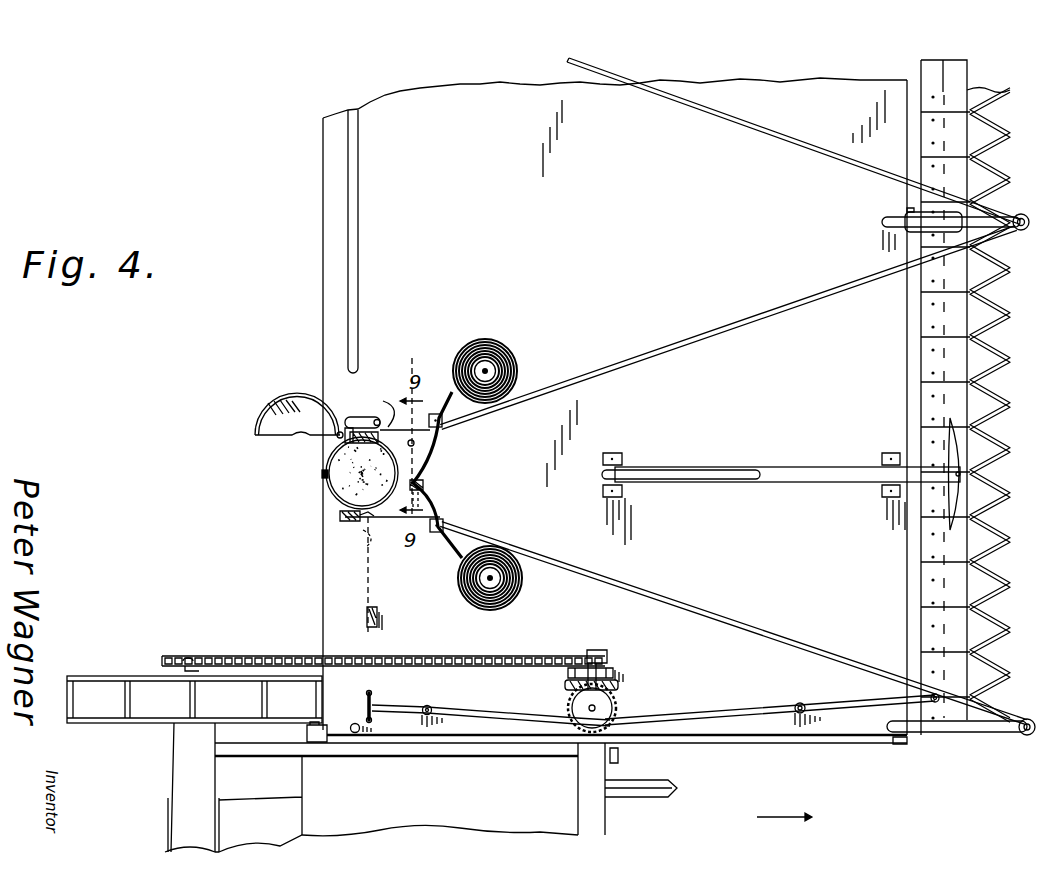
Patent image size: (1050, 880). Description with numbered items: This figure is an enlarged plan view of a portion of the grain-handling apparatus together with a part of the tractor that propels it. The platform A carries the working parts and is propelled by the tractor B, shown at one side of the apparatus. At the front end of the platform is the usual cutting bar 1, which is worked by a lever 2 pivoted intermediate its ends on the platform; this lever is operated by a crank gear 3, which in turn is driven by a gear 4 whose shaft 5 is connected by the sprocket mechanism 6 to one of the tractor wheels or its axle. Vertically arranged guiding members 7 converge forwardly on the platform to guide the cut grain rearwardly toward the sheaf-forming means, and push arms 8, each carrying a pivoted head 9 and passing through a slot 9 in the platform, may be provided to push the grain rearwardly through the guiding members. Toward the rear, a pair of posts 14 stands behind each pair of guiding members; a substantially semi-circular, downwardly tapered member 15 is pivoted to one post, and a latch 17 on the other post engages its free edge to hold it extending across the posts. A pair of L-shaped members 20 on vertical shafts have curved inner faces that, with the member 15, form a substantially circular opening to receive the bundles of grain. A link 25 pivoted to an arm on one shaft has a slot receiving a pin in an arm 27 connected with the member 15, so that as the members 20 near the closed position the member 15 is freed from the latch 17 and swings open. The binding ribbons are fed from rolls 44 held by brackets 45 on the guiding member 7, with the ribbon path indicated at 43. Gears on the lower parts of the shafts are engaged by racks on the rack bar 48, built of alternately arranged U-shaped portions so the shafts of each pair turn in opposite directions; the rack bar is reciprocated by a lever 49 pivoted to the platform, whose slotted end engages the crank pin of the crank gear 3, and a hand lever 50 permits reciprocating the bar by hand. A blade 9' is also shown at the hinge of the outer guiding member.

The cutting bar 1 is at (1005, 577).
The lever 2 is at (834, 705).
The crank gear 3 is at (617, 702).
The gear 4 is at (623, 681).
The shaft 5 is at (596, 650).
The sprocket mechanism 6 is at (262, 656).
The guiding members 7 is at (710, 333).
The push arms 8 is at (817, 467).
The pivoted head 9 is at (753, 481).
The blade 9' is at (918, 469).
The posts 14 is at (348, 522).
The semi-circular member 15 is at (272, 401).
The latch 17 is at (340, 517).
The L-shaped members 20 is at (430, 480).
The link 25 is at (364, 416).
The arm 27 is at (383, 409).
The belt 43 is at (447, 390).
The rolls 44 is at (492, 340).
The brackets 45 is at (522, 370).
The rack bar 48 is at (362, 553).
The lever 49 is at (468, 709).
The hand lever 50 is at (385, 620).
The platform A is at (666, 397).
The tractor B is at (172, 780).